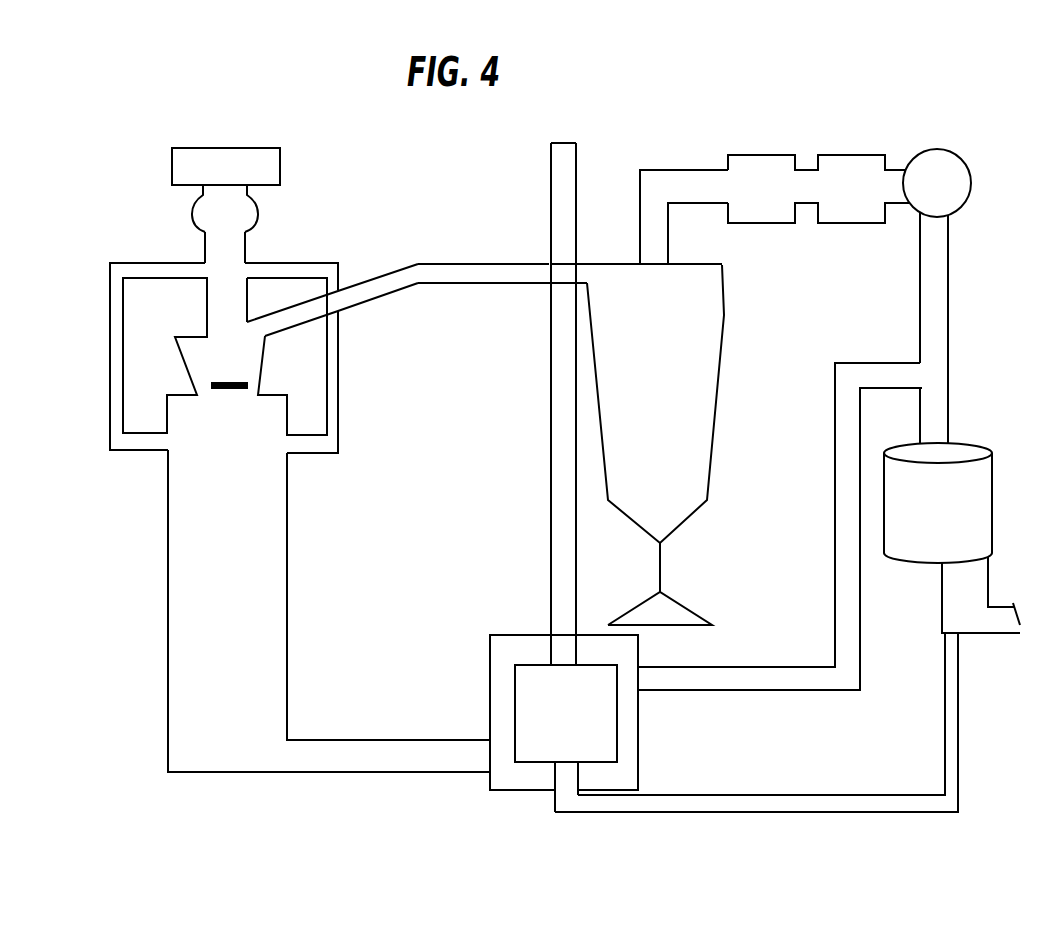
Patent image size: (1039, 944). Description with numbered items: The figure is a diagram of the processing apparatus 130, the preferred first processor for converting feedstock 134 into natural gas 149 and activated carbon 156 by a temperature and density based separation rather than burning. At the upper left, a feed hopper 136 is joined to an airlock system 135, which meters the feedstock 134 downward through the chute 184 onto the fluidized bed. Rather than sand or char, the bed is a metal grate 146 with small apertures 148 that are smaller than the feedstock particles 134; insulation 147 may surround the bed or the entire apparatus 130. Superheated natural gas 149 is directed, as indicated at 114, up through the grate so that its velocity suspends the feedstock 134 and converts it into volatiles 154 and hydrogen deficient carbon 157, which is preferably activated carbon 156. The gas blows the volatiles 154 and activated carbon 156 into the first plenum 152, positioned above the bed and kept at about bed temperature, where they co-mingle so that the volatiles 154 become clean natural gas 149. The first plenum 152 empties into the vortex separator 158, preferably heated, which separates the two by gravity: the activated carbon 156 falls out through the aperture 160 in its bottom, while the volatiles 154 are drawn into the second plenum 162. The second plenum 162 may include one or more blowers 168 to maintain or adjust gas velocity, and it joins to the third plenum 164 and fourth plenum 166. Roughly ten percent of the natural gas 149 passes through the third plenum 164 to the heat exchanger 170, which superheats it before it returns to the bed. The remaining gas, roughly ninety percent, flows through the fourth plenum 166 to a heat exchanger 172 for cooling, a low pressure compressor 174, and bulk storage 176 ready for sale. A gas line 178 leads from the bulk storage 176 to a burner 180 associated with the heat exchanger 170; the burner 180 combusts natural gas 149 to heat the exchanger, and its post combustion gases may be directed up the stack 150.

The processing apparatus 130 is at (492, 130).
The feedstock 134 is at (265, 164).
The feed hopper 136 is at (241, 181).
The airlock system 135 is at (240, 225).
The chute 184 is at (240, 260).
The insulation 147 is at (117, 343).
The superheated natural gas directing step 114 is at (242, 375).
The metal grate 146 is at (217, 392).
The apertures 148 is at (240, 393).
The natural gas 149 is at (248, 493).
The first plenum 152 is at (393, 268).
The volatiles 154 is at (448, 270).
The stack 150 is at (566, 182).
The activated carbon 156 is at (465, 272).
The vortex separator 158 is at (679, 396).
The aperture 160 is at (665, 548).
The hydrogen deficient carbon 157 is at (718, 612).
The second plenum 162 is at (805, 178).
The heat exchanger 172 is at (775, 201).
The blowers 168 is at (954, 200).
The fourth plenum 166 is at (935, 428).
The low pressure compressor 174 is at (956, 523).
The bulk storage 176 is at (980, 618).
The third plenum 164 is at (378, 762).
The burner 180 is at (584, 726).
The heat exchanger 170 is at (523, 782).
The gas line 178 is at (772, 808).